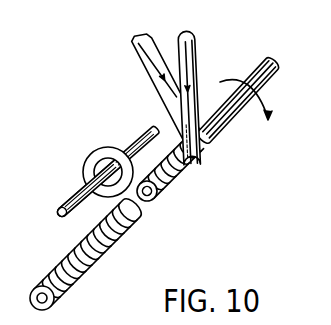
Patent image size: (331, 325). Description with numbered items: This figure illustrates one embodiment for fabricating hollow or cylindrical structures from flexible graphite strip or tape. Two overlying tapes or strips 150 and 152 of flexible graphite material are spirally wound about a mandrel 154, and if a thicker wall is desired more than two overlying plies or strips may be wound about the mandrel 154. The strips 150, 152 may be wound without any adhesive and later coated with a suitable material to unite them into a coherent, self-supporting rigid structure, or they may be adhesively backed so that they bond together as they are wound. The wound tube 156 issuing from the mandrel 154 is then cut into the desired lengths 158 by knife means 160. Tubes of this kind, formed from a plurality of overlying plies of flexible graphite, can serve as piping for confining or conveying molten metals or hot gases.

The tape or strip 150 is at (143, 50).
The tape or strip 152 is at (195, 78).
The mandrel 154 is at (276, 88).
The wound tube 156 is at (160, 196).
The desired lengths 158 is at (93, 263).
The knife means 160 is at (88, 157).